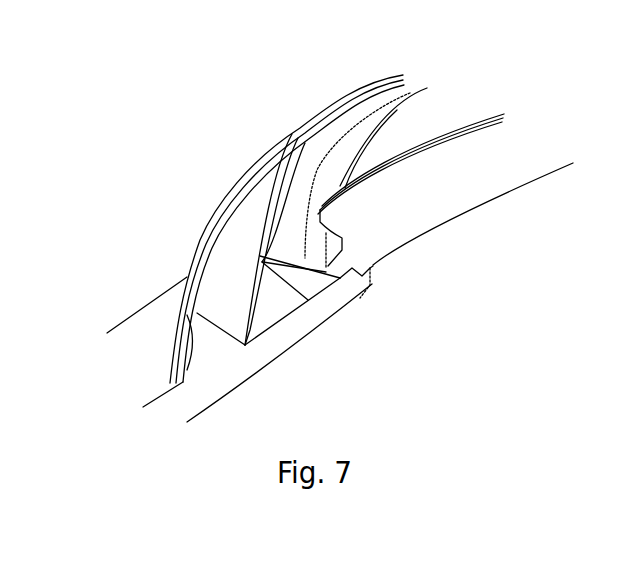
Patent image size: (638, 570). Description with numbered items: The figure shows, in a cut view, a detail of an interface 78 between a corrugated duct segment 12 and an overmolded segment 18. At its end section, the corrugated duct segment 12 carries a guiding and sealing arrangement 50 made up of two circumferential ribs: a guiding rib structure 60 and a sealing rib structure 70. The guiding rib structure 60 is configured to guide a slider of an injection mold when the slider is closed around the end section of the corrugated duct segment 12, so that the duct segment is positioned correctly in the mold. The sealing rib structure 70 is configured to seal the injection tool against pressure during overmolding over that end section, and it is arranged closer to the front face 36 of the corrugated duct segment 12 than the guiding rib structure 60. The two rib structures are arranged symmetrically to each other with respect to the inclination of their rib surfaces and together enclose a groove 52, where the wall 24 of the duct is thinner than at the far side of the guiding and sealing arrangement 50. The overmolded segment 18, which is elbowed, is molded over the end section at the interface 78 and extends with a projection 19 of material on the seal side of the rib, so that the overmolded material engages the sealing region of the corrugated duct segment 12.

The corrugated duct segment 12 is at (123, 337).
The overmolded segment 18 is at (433, 110).
The projection 19 is at (360, 100).
The wall 24 is at (210, 407).
The front face 36 is at (415, 278).
The guiding and sealing arrangement 50 is at (262, 208).
The groove 52 is at (293, 314).
The guiding rib structure 60 is at (233, 177).
The sealing rib structure 70 is at (338, 93).
The interface 78 is at (387, 294).